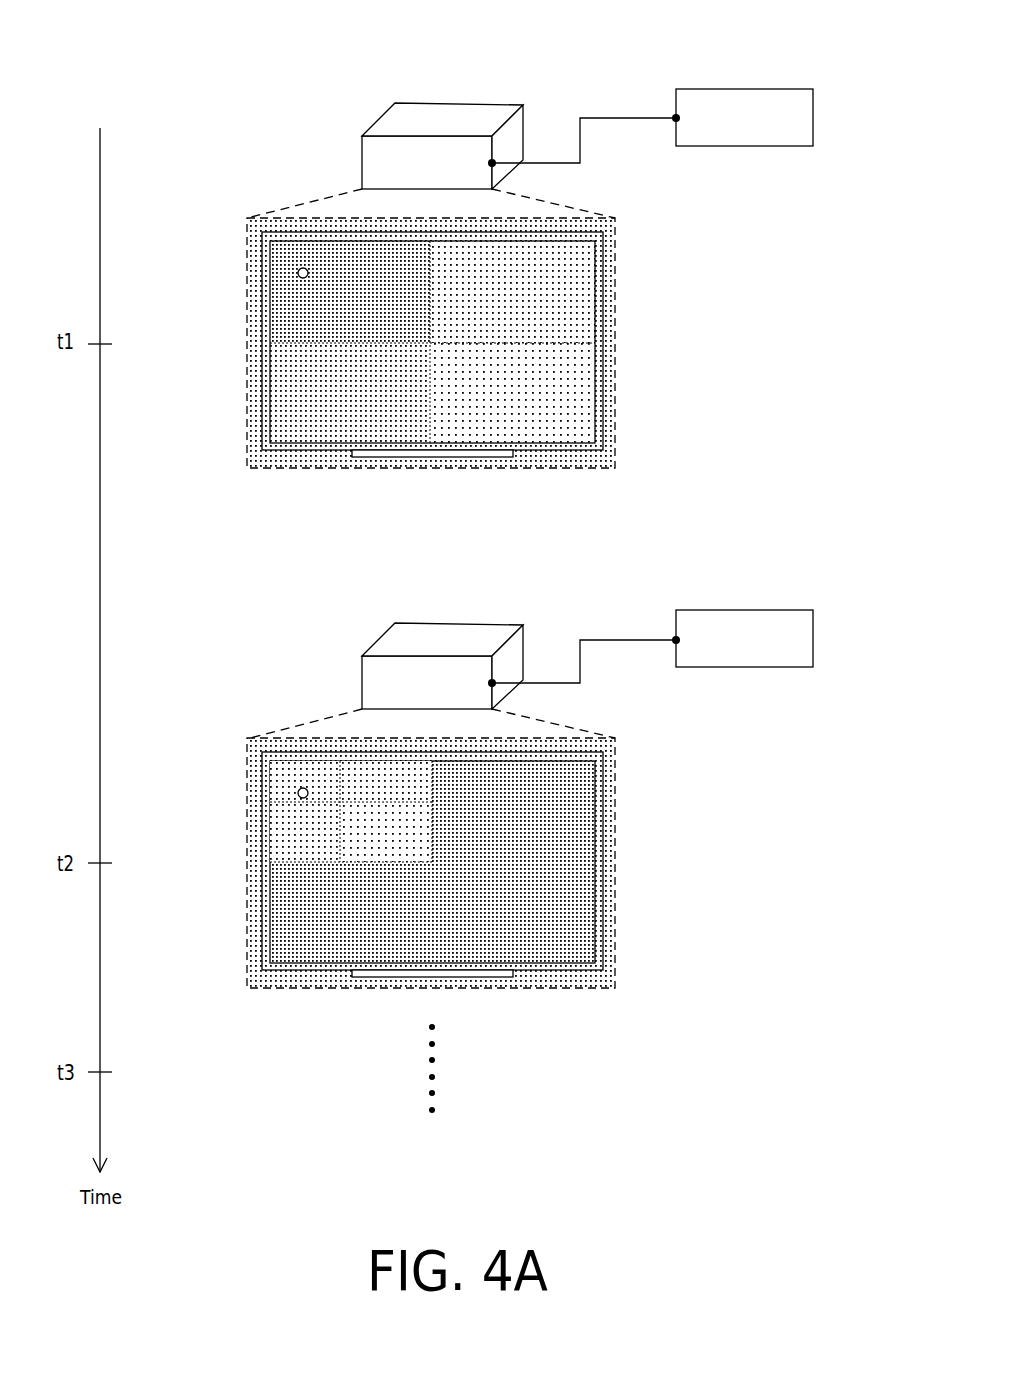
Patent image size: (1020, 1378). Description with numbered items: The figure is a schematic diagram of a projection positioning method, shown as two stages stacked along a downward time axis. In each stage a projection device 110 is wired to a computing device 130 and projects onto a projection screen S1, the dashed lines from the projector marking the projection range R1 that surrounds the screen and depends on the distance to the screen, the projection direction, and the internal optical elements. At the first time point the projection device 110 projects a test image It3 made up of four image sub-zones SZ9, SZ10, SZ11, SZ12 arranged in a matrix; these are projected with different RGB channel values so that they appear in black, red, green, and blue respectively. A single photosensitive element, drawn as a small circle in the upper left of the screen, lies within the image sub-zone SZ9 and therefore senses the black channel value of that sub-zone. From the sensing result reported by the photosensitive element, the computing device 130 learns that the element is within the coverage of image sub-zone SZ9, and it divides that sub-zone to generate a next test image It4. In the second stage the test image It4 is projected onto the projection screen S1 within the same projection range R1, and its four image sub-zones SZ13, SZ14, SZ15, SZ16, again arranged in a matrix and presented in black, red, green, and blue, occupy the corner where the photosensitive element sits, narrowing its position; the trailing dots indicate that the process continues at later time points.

The projection device 110 is at (458, 102).
The computing device 130 is at (745, 88).
The projection screen S1 is at (603, 422).
The projection range R1 is at (548, 470).
The test image It3 is at (616, 262).
The test image It4 is at (620, 832).
The image sub-zone SZ9 is at (275, 318).
The image sub-zone SZ10 is at (575, 318).
The image sub-zone SZ11 is at (578, 378).
The image sub-zone SZ12 is at (280, 378).
The image sub-zone SZ13 is at (280, 778).
The image sub-zone SZ14 is at (373, 780).
The image sub-zone SZ15 is at (375, 845).
The image sub-zone SZ16 is at (278, 840).